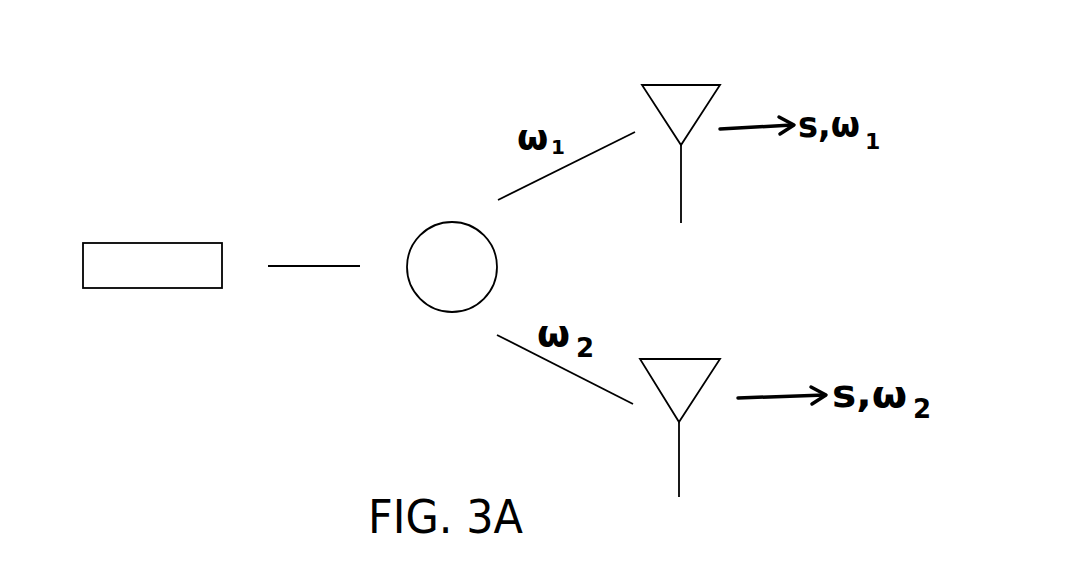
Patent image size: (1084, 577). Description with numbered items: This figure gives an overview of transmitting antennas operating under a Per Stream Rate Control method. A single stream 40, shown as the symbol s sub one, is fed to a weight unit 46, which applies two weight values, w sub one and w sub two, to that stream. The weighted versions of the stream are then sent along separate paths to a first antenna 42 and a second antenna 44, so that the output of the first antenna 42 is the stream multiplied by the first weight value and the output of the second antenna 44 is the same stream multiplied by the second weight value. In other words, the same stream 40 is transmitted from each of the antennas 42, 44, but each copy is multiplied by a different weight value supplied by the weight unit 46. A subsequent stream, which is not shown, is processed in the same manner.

The stream 40 is at (101, 240).
The antenna 42 is at (667, 90).
The antenna 44 is at (678, 357).
The weight unit 46 is at (428, 232).